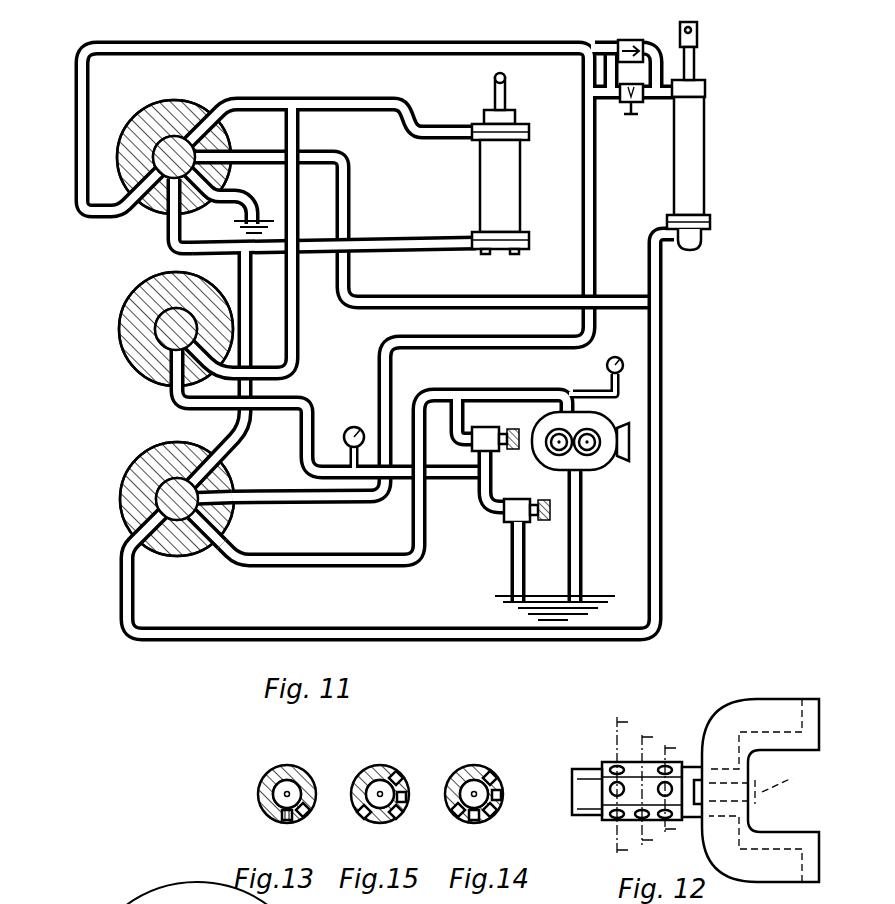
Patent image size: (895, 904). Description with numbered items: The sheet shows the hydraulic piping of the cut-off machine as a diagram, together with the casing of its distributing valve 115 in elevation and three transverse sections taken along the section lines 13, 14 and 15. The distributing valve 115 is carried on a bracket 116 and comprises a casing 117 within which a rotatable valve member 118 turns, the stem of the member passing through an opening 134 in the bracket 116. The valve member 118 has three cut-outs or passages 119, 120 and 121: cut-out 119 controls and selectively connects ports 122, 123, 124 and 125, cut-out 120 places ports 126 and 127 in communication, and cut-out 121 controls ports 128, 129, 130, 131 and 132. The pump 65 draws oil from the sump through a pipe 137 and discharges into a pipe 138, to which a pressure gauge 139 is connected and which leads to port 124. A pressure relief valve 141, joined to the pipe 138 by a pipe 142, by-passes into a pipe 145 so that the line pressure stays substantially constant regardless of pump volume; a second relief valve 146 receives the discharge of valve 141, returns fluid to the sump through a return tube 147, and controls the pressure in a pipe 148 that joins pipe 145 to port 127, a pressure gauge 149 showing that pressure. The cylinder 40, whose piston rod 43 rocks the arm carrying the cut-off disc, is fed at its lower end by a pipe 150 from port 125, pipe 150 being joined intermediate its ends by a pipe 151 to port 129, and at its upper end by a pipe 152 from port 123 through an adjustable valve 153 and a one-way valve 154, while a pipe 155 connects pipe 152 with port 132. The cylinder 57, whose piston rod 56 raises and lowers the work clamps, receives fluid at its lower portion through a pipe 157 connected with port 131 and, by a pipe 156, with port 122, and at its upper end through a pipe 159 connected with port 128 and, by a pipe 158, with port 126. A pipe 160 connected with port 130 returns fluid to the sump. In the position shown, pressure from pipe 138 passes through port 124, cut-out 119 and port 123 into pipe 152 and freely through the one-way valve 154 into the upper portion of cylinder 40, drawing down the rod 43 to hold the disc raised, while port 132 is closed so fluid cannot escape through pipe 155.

In FIG. 12, the section line 13— 13 is at (657, 787).
In FIG. 12, the section line 14— 14 is at (680, 787).
In FIG. 12, the section line 15— 15 is at (632, 785).
In FIG. 11, the cylinder 40 is at (703, 144).
In FIG. 11, the piston rod 43 is at (693, 63).
In FIG. 11, the piston rod 56 is at (493, 88).
In FIG. 11, the cylinder 57 is at (478, 170).
In FIG. 11, the pump 65 is at (600, 430).
In FIG. 12, the distributing valve 115 is at (731, 679).
In FIG. 12, the bracket 116 is at (765, 697).
In FIG. 11, the valve casing 117 is at (145, 102).
In FIG. 13, the valve casing 117 is at (287, 794).
In FIG. 15, the valve casing 117 is at (380, 794).
In FIG. 14, the valve casing 117 is at (474, 794).
In FIG. 12, the valve casing 117 is at (600, 820).
In FIG. 11, the valve member 118 is at (158, 160).
In FIG. 13, the valve member 118 is at (287, 794).
In FIG. 15, the valve member 118 is at (380, 794).
In FIG. 14, the valve member 118 is at (474, 794).
In FIG. 12, the valve member 118 is at (589, 897).
In FIG. 11, the cut-out 119 is at (228, 471).
In FIG. 11, the cut-out 120 is at (190, 313).
In FIG. 11, the cut-out 121 is at (224, 133).
In FIG. 11, the port 122 is at (207, 455).
In FIG. 15, the port 122 is at (395, 774).
In FIG. 11, the port 123 is at (240, 503).
In FIG. 15, the port 123 is at (403, 790).
In FIG. 11, the port 124 is at (214, 554).
In FIG. 15, the port 124 is at (396, 813).
In FIG. 11, the port 125 is at (140, 552).
In FIG. 15, the port 125 is at (366, 812).
In FIG. 11, the port 126 is at (205, 350).
In FIG. 13, the port 126 is at (308, 806).
In FIG. 11, the port 127 is at (170, 376).
In FIG. 13, the port 127 is at (280, 818).
In FIG. 11, the port 128 is at (195, 99).
In FIG. 14, the port 128 is at (491, 774).
In FIG. 11, the port 129 is at (232, 152).
In FIG. 14, the port 129 is at (499, 790).
In FIG. 11, the port 130 is at (210, 184).
In FIG. 14, the port 130 is at (496, 807).
In FIG. 11, the port 131 is at (166, 214).
In FIG. 14, the port 131 is at (480, 816).
In FIG. 11, the port 132 is at (133, 208).
In FIG. 14, the port 132 is at (462, 814).
In FIG. 12, the opening 134 is at (785, 778).
In FIG. 11, the pipe 137 is at (578, 556).
In FIG. 11, the pipe 138 is at (285, 557).
In FIG. 11, the pressure gauge 139 is at (621, 365).
In FIG. 11, the pressure relief valve 141 is at (490, 428).
In FIG. 11, the pipe 142 is at (460, 412).
In FIG. 11, the pipe 145 is at (491, 486).
In FIG. 11, the second relief valve 146 is at (508, 510).
In FIG. 11, the return tube 147 is at (512, 556).
In FIG. 11, the pipe 148 is at (302, 411).
In FIG. 11, the pressure gauge 149 is at (352, 424).
In FIG. 11, the pipe 150 is at (208, 630).
In FIG. 11, the pipe 151 is at (343, 197).
In FIG. 11, the pipe 152 is at (594, 202).
In FIG. 11, the adjustable valve 153 is at (630, 114).
In FIG. 11, the one way valve 154 is at (615, 38).
In FIG. 11, the pipe 155 is at (360, 44).
In FIG. 11, the pipe 156 is at (248, 399).
In FIG. 11, the pipe 157 is at (380, 238).
In FIG. 11, the pipe 158 is at (296, 348).
In FIG. 11, the pipe 159 is at (320, 95).
In FIG. 11, the pipe 160 is at (230, 201).